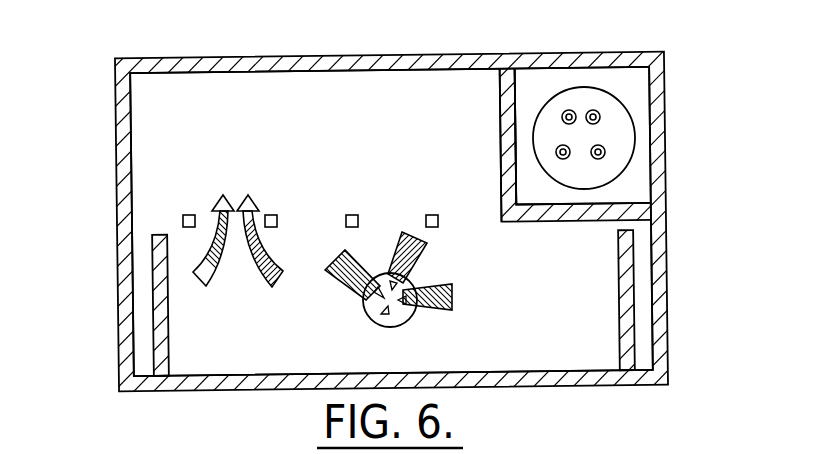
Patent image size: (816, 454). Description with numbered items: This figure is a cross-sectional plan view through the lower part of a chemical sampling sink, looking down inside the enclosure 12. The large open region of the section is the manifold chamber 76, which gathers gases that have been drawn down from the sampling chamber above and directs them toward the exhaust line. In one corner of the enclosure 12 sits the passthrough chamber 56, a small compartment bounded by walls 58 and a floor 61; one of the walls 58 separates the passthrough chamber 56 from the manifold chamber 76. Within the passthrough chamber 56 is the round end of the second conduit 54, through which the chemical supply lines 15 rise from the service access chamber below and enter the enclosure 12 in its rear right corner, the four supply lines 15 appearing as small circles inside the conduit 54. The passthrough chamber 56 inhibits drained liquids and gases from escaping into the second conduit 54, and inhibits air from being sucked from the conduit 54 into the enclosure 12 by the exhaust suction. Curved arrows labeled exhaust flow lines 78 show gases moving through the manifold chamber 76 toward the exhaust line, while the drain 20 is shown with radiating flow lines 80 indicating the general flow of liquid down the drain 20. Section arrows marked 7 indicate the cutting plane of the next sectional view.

The enclosure 12 is at (115, 88).
The manifold chamber 76 is at (290, 108).
The walls 58 is at (500, 100).
The passthrough chamber 56 is at (497, 99).
The floor 61 is at (627, 75).
The chemical supply lines 15 is at (562, 145).
The second conduit 54 is at (615, 178).
The section line 7- 7 is at (43, 263).
The exhaust flow lines 78 is at (266, 279).
The flow lines 80 is at (343, 262).
The drain 20 is at (378, 319).